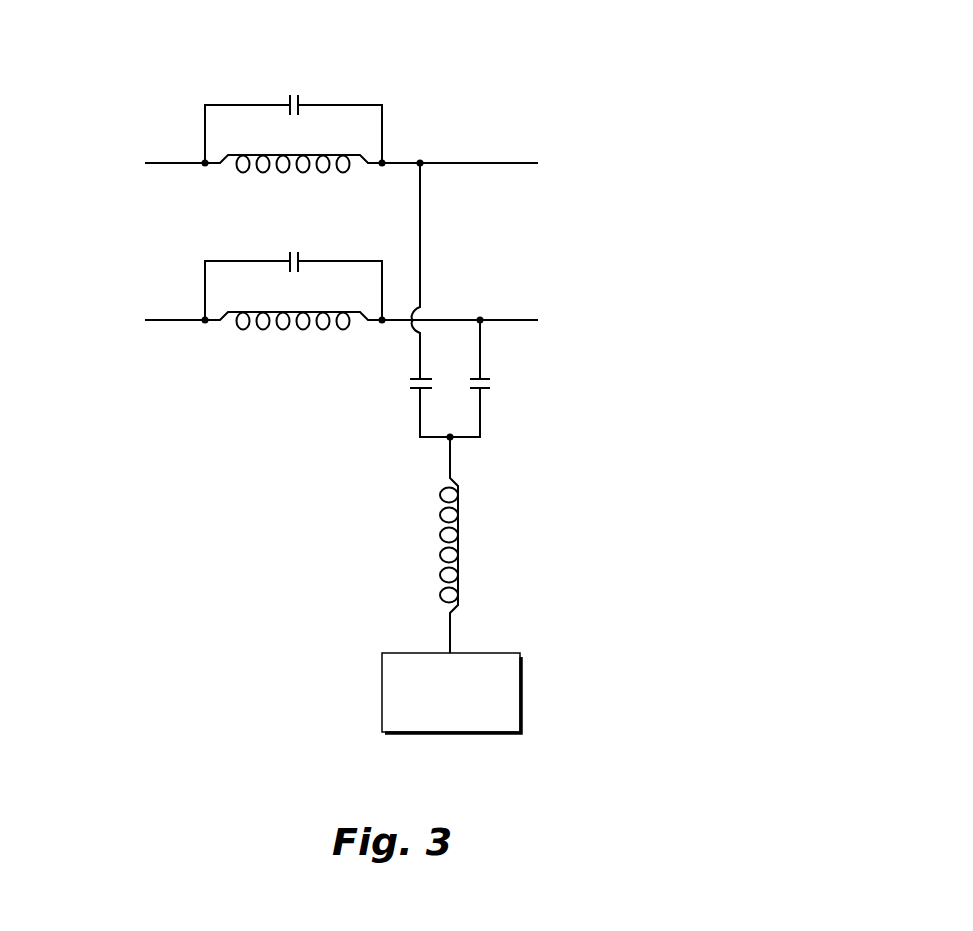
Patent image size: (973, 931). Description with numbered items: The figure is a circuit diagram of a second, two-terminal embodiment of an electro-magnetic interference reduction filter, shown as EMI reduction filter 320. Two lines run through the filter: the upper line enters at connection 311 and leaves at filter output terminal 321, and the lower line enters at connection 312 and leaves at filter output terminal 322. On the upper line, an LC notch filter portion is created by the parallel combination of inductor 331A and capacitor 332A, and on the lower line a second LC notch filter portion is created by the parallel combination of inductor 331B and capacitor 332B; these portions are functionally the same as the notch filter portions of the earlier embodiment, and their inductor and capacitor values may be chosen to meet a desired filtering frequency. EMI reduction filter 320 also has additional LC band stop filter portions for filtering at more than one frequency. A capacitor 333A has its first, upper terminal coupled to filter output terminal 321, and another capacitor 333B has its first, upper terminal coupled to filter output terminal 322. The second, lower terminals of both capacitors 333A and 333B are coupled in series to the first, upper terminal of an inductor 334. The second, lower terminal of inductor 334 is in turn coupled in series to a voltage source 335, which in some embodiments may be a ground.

The connection 311 is at (165, 163).
The connection 312 is at (165, 320).
The filter output terminal 321 is at (515, 163).
The filter output terminal 322 is at (515, 320).
The inductor 331A is at (303, 175).
The inductor 331B is at (303, 332).
The capacitor 332A is at (292, 95).
The capacitor 332B is at (292, 252).
The capacitor 333A is at (408, 386).
The capacitor 333B is at (492, 386).
The inductor 334 is at (464, 547).
The voltage source 335 is at (523, 690).
The EMI reduction filter 320 is at (814, 400).